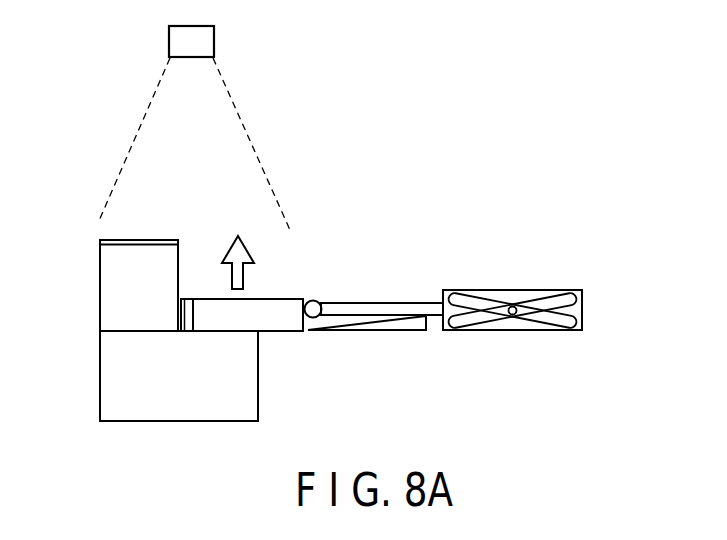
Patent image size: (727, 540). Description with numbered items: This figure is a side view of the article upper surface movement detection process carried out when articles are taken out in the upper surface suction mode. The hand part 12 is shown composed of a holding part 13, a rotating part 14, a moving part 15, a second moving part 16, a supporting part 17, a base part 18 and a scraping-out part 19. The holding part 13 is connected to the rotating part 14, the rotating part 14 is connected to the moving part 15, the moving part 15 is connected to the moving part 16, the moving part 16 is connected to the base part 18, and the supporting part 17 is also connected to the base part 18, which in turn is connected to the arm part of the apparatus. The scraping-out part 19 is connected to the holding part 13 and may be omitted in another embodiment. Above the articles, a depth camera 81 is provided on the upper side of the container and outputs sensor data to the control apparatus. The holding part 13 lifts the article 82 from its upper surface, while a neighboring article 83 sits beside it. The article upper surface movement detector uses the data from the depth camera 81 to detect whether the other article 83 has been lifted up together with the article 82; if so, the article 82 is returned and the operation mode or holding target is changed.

The hand part 12 is at (490, 236).
The holding part 13 is at (283, 299).
The rotating part 14 is at (316, 301).
The moving part 15 is at (425, 302).
The moving part 16 is at (549, 290).
The supporting part 17 is at (397, 332).
The base part 18 is at (520, 331).
The scraping-out part 19 is at (187, 298).
The depth camera 81 is at (169, 38).
The article 82 is at (100, 374).
The article 83 is at (100, 285).